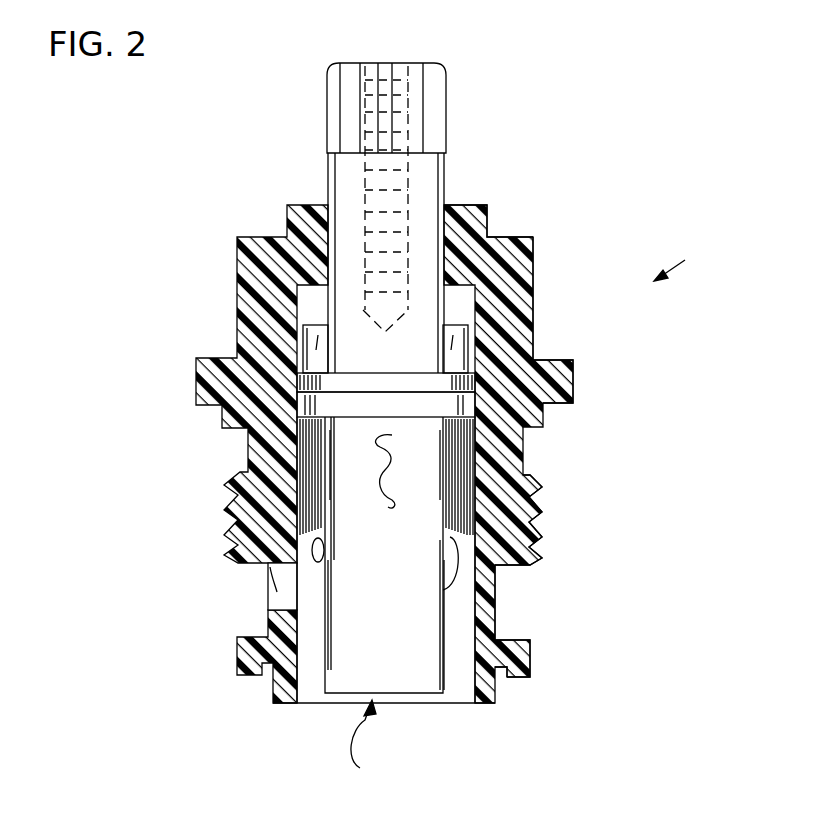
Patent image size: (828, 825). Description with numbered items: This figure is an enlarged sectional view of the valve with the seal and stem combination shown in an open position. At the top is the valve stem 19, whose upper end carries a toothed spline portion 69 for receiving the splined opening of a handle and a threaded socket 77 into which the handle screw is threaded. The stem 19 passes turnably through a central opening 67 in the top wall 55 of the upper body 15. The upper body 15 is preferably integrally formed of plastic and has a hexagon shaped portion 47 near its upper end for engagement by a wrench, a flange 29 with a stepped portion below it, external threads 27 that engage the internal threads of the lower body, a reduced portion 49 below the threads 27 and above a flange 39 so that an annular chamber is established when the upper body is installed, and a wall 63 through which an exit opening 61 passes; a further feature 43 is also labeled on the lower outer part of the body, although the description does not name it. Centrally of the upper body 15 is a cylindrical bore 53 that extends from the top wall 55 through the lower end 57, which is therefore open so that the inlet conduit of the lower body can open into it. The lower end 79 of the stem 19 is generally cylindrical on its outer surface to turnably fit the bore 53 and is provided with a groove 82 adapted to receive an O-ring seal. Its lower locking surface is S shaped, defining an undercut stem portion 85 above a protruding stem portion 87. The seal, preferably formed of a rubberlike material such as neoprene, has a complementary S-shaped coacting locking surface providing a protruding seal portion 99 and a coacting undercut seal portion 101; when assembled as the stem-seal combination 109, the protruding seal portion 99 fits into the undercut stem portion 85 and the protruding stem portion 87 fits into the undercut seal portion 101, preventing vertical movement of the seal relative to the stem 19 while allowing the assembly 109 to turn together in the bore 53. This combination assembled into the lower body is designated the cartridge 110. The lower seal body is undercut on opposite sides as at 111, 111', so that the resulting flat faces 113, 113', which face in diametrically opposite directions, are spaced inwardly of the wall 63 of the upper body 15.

The upper body 15 is at (250, 290).
The valve stem 19 is at (422, 182).
The external threads 27 is at (535, 512).
The flange 29 is at (575, 375).
The flange 39 is at (532, 656).
The notch 43 is at (503, 672).
The hexagon shaped portion 47 is at (533, 270).
The reduced portion 49 is at (496, 597).
The cylindrical bore 53 is at (476, 655).
The top wall 55 is at (476, 217).
The lower end 57 is at (313, 703).
The exit opening 61 is at (268, 590).
The wall 63 is at (280, 620).
The central opening 67 is at (330, 212).
The toothed spline portion 69 is at (432, 93).
The threaded socket 77 is at (400, 184).
The lower end 79 is at (316, 437).
The groove 82 is at (478, 388).
The undercut stem portion 85 is at (395, 440).
The protruding stem portion 87 is at (393, 497).
The protruding seal portion 99 is at (380, 440).
The coacting undercut seal portion 101 is at (387, 492).
The stem-seal combination 109 is at (378, 740).
The cartridge 110 is at (692, 259).
The undercut 111 is at (351, 543).
The undercut 111' is at (415, 613).
The flat face 113 is at (354, 615).
The flat face 113' is at (416, 625).